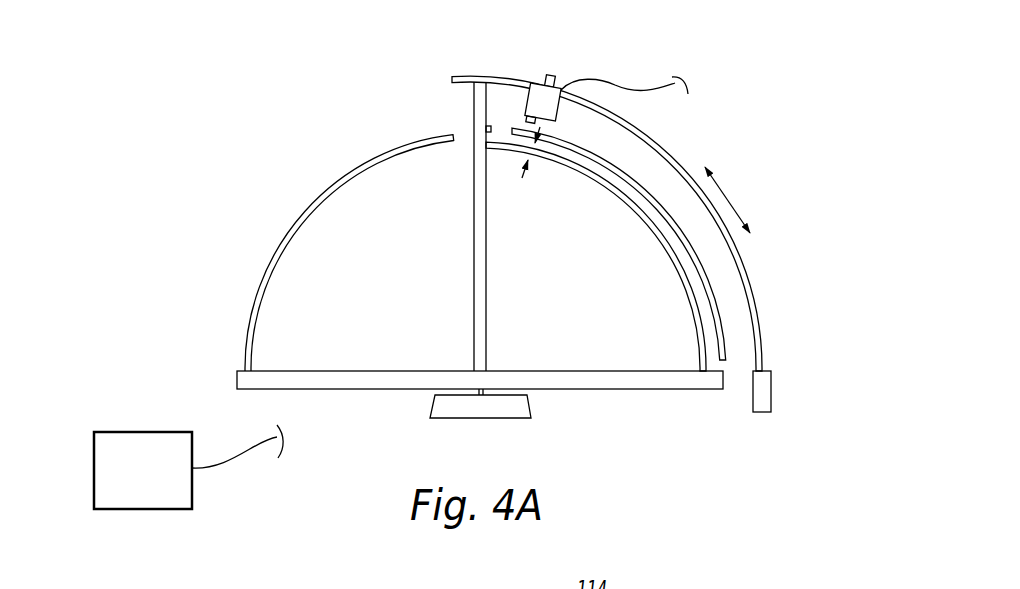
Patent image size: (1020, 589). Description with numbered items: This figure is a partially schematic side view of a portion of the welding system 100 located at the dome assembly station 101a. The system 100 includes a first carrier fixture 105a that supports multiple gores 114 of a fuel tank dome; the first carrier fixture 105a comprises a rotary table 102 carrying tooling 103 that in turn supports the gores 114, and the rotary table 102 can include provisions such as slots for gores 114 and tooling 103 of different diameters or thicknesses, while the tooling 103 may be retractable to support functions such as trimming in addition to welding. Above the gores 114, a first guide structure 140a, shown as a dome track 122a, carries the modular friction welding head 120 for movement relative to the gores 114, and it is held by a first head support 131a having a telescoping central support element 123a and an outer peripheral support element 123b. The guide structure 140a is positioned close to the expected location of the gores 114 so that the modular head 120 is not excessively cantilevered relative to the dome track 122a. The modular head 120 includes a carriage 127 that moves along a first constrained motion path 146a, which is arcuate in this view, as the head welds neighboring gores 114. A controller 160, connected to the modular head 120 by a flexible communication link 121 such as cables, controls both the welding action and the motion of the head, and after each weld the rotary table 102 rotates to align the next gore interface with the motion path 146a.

The system 100 is at (302, 62).
The dome assembly station 101a is at (203, 391).
The rotary table 102 is at (355, 365).
The tooling 103 is at (687, 287).
The first carrier fixture 105a is at (710, 423).
The gores 114 is at (305, 198).
The modular friction welding head 120 is at (568, 65).
The communication link 121 is at (648, 95).
The dome track 122a is at (740, 257).
The central support element 123a is at (478, 128).
The peripheral support element 123b is at (762, 412).
The carriage 127 is at (531, 81).
The first head support 131a is at (778, 358).
The first guide structure 140a is at (755, 157).
The first constrained motion path 146a is at (735, 203).
The controller 160 is at (145, 509).